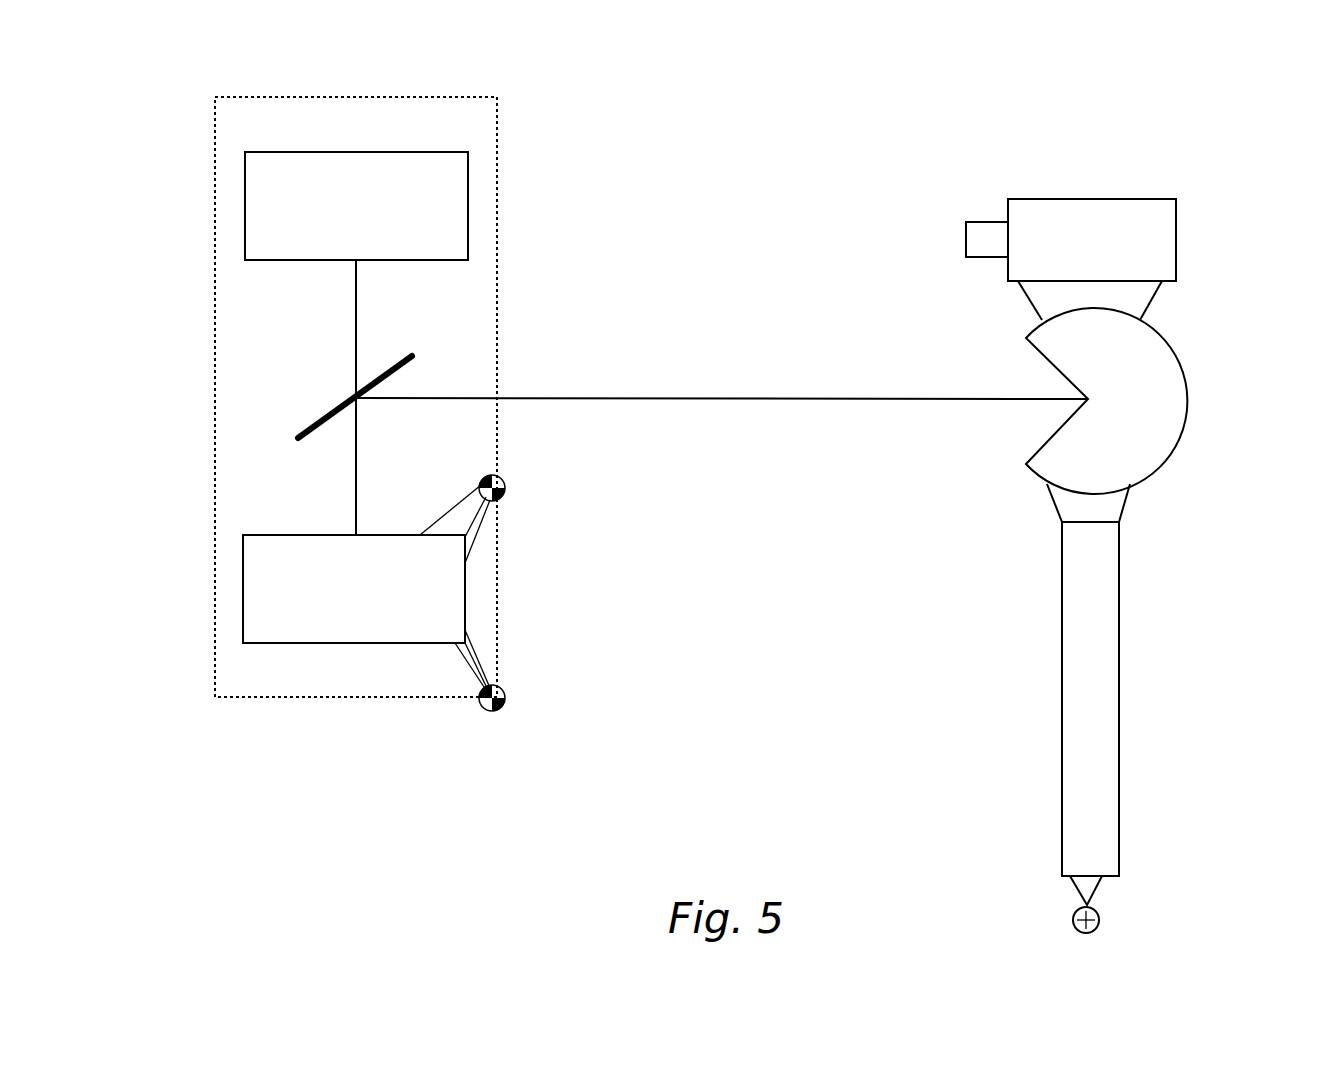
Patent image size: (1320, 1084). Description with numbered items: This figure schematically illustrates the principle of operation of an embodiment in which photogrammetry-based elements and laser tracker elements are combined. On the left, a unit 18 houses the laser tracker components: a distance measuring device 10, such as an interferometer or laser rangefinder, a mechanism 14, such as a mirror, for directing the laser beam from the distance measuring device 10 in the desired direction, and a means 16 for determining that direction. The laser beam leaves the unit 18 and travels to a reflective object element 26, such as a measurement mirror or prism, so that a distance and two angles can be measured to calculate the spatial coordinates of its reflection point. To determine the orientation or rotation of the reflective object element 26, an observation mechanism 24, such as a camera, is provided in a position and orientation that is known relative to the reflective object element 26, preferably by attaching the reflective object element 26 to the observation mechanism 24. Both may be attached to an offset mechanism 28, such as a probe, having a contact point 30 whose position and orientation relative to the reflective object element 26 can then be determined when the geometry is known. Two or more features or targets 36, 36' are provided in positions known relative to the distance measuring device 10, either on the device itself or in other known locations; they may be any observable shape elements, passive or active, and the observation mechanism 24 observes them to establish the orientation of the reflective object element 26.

The unit 18 is at (360, 97).
The mechanism for directing a laser beam 14 is at (245, 205).
The means for determining direction 16 is at (468, 205).
The distance measuring device 10 is at (243, 590).
The feature or target 36' is at (503, 519).
The feature or target 36 is at (512, 698).
The observation mechanism 24 is at (1176, 240).
The reflective object element 26 is at (1182, 368).
The offset mechanism 28 is at (1119, 695).
The contact point 30 is at (1101, 912).